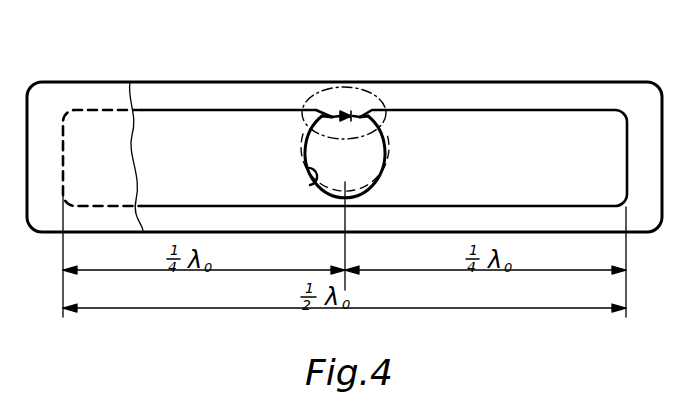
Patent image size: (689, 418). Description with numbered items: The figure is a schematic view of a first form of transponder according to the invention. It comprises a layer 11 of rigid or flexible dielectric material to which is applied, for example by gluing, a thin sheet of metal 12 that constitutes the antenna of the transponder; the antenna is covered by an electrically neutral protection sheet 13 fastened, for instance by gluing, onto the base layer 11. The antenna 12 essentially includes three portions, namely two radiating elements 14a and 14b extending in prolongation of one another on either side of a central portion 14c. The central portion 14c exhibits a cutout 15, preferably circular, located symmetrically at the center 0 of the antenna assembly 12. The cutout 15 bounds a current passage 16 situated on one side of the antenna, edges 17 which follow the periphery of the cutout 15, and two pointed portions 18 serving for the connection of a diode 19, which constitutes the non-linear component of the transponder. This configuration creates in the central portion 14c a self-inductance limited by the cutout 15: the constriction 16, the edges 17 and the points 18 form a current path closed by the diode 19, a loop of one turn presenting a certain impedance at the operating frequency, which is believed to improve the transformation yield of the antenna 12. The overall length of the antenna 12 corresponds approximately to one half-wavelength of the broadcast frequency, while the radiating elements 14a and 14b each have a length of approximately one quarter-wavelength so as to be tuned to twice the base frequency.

The center point 0 is at (377, 100).
The layer 11 is at (183, 92).
The thin sheet of metal 12 is at (228, 147).
The protection sheet 13 is at (52, 98).
The radiating element 14a is at (204, 162).
The radiating element 14b is at (576, 163).
The central portion 14c is at (393, 172).
The cutout 15 is at (320, 178).
The current passage 16 is at (348, 203).
The edges 17 is at (303, 151).
The pointed portions 18 is at (318, 110).
The diode 19 is at (348, 113).